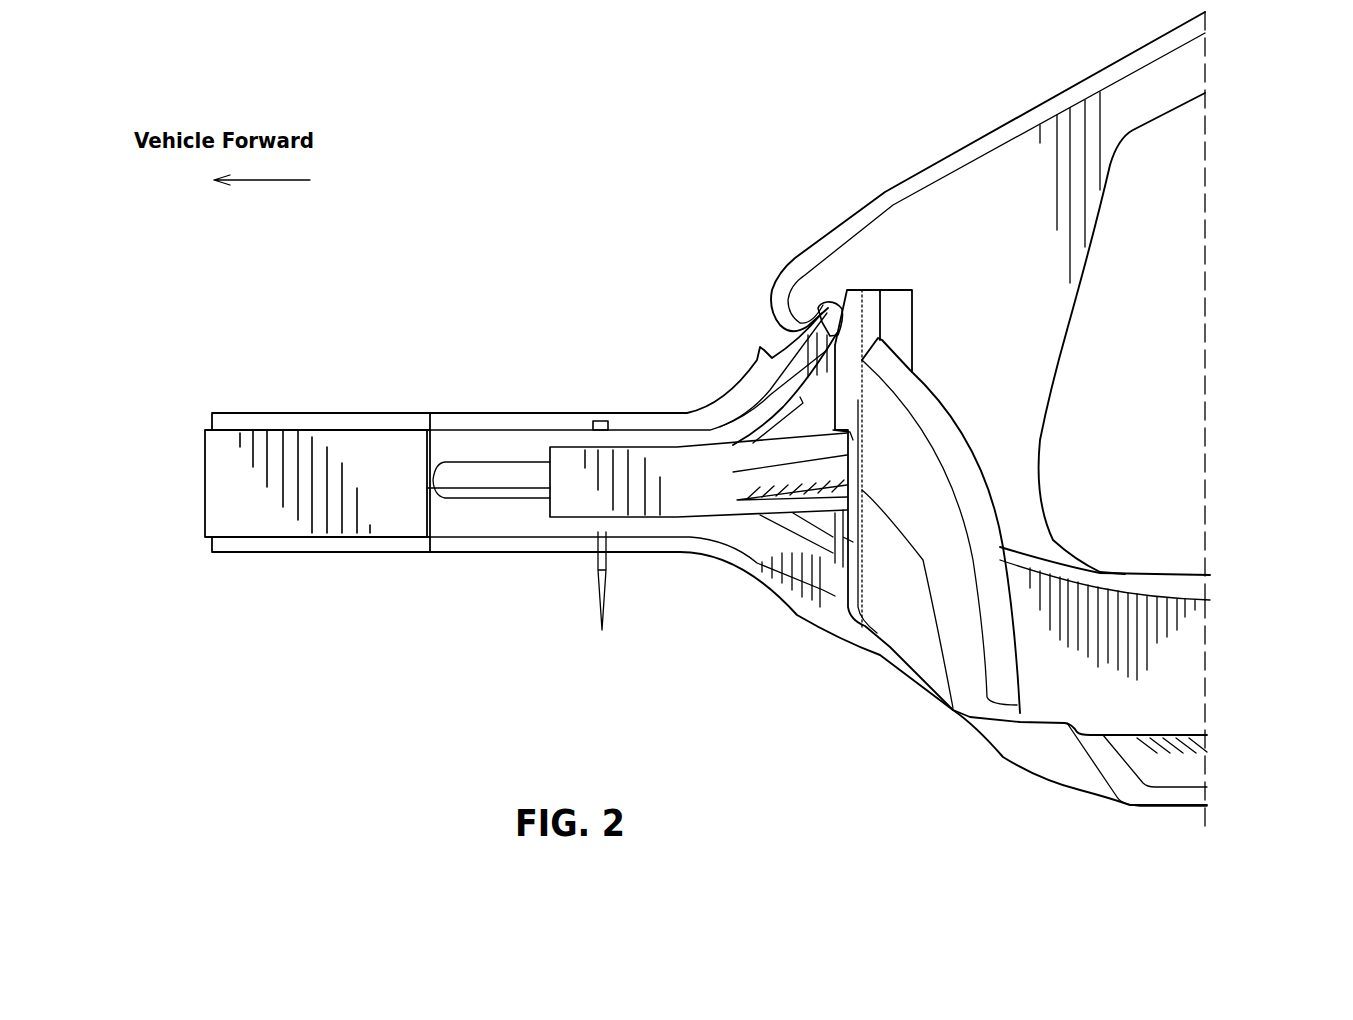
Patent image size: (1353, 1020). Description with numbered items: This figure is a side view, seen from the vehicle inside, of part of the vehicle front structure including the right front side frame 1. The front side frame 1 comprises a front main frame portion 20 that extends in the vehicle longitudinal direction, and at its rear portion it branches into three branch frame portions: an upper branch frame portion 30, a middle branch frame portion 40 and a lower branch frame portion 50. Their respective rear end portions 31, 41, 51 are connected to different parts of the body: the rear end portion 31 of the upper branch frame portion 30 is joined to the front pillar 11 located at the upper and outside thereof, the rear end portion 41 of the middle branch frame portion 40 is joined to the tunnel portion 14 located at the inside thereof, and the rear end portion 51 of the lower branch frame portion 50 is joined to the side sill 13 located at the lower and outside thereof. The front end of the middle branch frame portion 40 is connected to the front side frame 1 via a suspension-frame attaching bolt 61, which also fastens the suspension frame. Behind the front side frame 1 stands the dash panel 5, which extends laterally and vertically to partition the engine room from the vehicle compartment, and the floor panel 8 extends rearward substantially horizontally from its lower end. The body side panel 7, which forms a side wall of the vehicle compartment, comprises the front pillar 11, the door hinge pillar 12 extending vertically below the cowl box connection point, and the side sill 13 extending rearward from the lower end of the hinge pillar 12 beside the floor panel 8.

The front side frame 1 is at (434, 388).
The front main frame portion 20 is at (280, 432).
The upper branch frame portion 30 is at (525, 447).
The rear end portion of upper branch frame portion 31 is at (822, 300).
The lower branch frame portion 50 is at (497, 523).
The middle branch frame portion 40 is at (677, 503).
The suspension-frame attaching bolt 61 is at (604, 424).
The dash panel 5 is at (837, 557).
The rear end portion of middle branch frame portion 41 is at (843, 467).
The rear end portion of lower branch frame portion 51 is at (832, 608).
The body side panel 7 is at (889, 170).
The front pillar 11 is at (1013, 170).
The door hinge pillar 12 is at (1020, 425).
The side sill 13 is at (1168, 572).
The tunnel portion 14 is at (1187, 672).
The floor panel 8 is at (1193, 770).